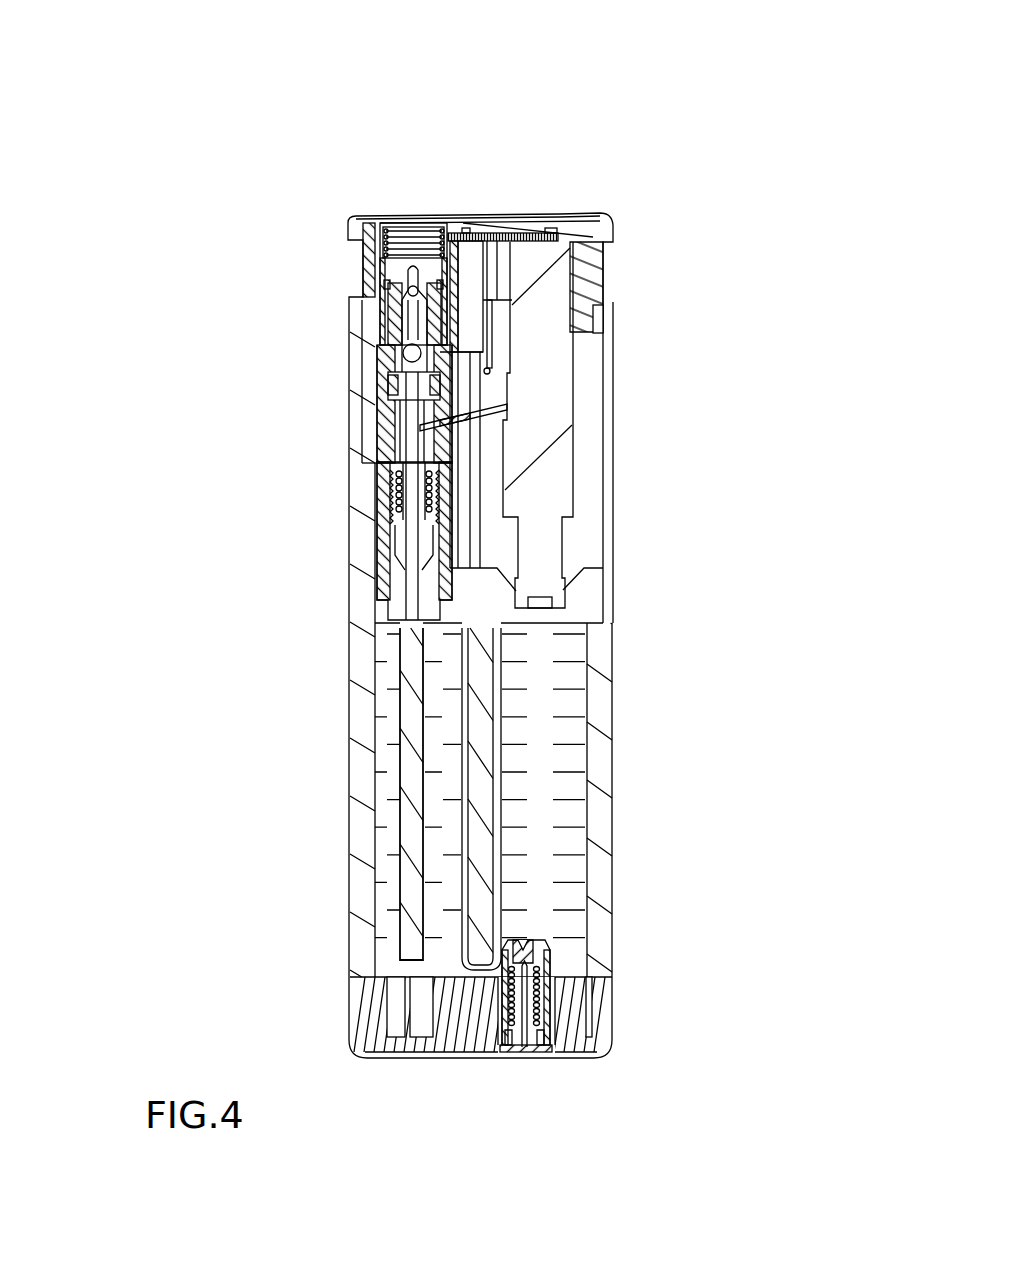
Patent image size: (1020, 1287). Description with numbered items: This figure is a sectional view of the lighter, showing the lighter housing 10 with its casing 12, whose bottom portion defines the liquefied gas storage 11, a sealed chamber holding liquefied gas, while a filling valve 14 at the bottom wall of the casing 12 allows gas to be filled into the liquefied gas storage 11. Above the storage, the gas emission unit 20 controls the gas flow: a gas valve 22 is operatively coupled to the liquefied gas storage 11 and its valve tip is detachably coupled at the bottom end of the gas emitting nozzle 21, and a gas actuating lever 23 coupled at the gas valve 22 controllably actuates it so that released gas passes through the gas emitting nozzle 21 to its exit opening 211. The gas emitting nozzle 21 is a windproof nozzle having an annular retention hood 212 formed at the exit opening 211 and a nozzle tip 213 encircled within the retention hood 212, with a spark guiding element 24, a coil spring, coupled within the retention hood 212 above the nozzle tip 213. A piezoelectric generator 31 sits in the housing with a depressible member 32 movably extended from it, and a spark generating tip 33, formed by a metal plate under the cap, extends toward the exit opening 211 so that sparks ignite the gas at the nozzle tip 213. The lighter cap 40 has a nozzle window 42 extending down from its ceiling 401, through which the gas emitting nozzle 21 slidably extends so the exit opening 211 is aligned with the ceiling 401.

The lighter housing 10 is at (770, 797).
The liquefied gas storage 11 is at (568, 893).
The casing 12 is at (607, 818).
The filling valve 14 is at (540, 1046).
The gas emission unit 20 is at (185, 130).
The gas emitting nozzle 21 is at (178, 270).
The exit opening 211 is at (401, 200).
The retention hood 212 is at (363, 270).
The nozzle tip 213 is at (395, 328).
The gas valve 22 is at (402, 432).
The gas actuating lever 23 is at (463, 422).
The spark guiding element 24 is at (383, 258).
The piezoelectric generator 31 is at (548, 392).
The depressible member 32 is at (552, 555).
The spark generating tip 33 is at (510, 240).
The lighter cap 40 is at (595, 228).
The ceiling 401 is at (604, 200).
The nozzle window 42 is at (466, 202).